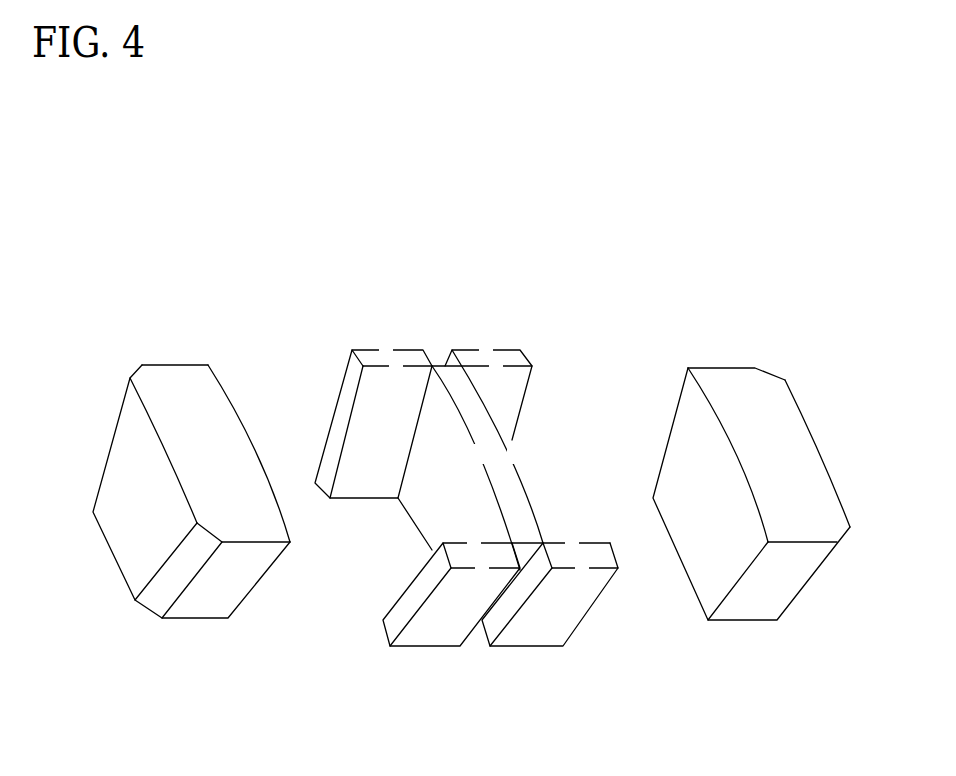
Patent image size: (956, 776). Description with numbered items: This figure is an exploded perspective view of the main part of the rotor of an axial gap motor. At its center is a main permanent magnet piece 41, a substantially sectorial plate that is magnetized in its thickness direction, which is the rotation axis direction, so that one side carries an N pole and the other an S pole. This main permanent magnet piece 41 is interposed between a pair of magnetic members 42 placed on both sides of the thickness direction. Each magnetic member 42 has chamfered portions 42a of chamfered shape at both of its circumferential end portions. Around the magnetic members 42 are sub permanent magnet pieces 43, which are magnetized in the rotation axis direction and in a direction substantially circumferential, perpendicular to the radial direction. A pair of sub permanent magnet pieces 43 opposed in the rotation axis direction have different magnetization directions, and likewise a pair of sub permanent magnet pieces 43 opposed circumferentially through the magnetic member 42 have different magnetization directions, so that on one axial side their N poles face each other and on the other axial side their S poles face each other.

The main permanent magnet piece 41 is at (512, 485).
The magnetic member 42 is at (185, 380).
The chamfered portion 42a is at (134, 374).
The sub permanent magnet piece 43 is at (511, 360).